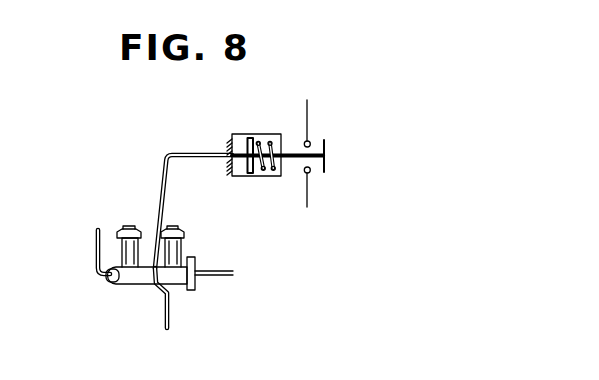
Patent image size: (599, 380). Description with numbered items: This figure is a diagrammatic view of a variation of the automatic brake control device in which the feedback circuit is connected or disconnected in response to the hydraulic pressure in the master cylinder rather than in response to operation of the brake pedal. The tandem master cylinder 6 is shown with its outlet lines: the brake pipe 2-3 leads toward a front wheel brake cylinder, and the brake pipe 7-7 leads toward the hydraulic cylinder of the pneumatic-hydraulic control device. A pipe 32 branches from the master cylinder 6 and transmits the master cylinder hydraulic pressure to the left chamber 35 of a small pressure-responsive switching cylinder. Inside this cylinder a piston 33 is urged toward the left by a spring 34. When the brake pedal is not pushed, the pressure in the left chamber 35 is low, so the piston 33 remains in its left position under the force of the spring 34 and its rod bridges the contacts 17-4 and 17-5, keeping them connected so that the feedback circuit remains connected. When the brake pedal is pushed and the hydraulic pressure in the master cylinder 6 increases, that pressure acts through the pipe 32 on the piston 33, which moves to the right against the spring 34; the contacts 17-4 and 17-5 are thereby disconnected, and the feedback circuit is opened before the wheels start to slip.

The pipe 32 is at (167, 162).
The piston 33 is at (295, 152).
The spring 34 is at (259, 141).
The left chamber 35 is at (242, 177).
The contact 17-5 is at (310, 142).
The contact 17-4 is at (310, 172).
The brake pipe 7-7 is at (96, 242).
The tandem master cylinder 6 is at (130, 283).
The brake pipe 2-3 is at (170, 310).